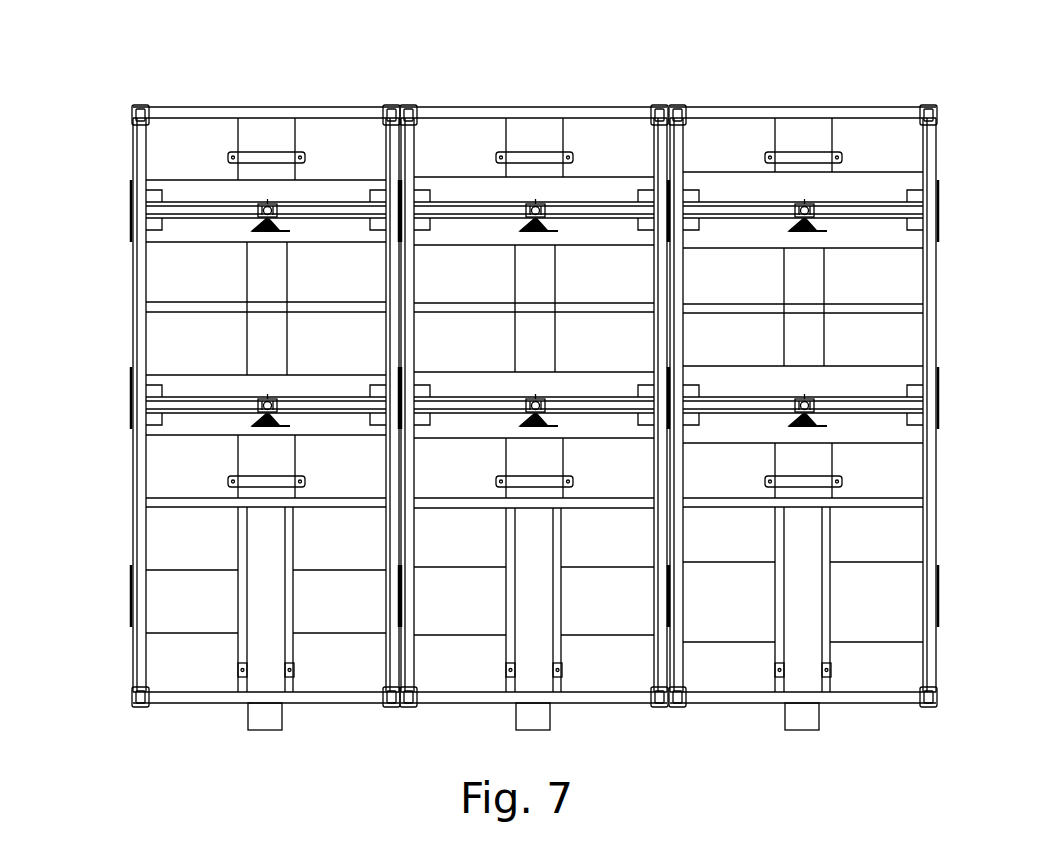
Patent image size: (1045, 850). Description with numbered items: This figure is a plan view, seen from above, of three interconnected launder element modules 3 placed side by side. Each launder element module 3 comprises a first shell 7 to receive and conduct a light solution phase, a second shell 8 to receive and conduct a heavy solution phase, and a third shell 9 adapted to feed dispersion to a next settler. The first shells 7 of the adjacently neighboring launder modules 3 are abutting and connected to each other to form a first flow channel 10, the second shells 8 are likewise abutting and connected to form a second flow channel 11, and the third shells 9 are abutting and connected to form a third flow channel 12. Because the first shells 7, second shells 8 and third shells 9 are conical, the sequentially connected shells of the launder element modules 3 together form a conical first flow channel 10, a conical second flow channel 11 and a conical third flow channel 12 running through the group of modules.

The launder element module 3 is at (278, 88).
The first shell 7 is at (228, 590).
The second shell 8 is at (236, 386).
The third shell 9 is at (224, 193).
The first flow channel 10 is at (123, 605).
The second flow channel 11 is at (121, 407).
The third flow channel 12 is at (121, 219).